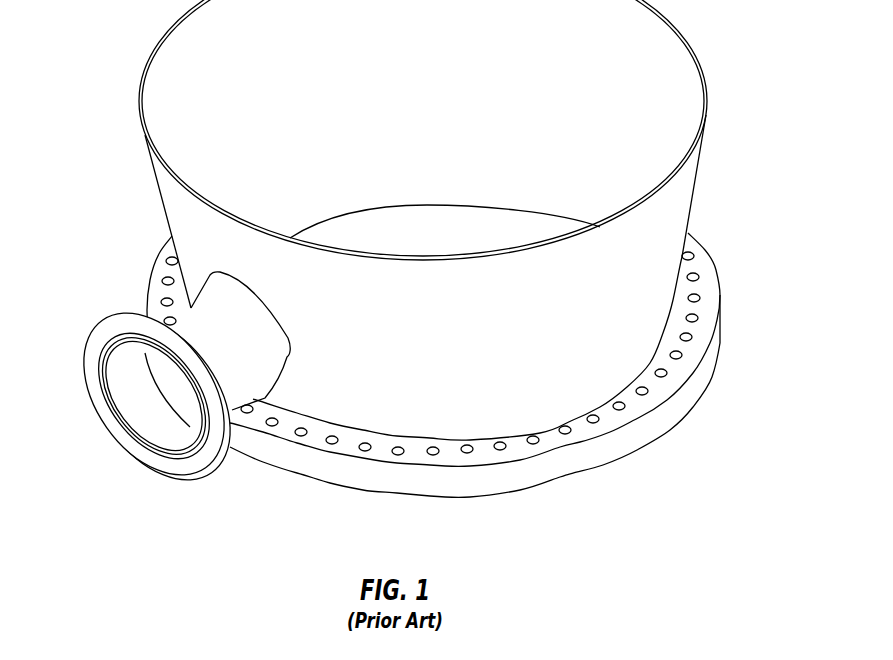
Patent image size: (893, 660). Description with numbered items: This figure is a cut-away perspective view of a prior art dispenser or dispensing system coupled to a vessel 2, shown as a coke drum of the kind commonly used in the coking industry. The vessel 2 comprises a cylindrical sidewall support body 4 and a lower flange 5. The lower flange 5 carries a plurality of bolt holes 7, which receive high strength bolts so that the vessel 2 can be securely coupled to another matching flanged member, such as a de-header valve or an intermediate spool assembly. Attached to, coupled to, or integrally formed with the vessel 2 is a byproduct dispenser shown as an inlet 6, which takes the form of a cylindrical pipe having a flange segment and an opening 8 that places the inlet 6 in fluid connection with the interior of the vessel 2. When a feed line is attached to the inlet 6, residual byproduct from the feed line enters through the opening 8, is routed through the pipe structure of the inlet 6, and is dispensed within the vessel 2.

The vessel 2 is at (116, 186).
The cylindrical sidewall support body 4 is at (675, 211).
The lower flange 5 is at (649, 432).
The inlet 6 is at (125, 296).
The bolt holes 7 is at (694, 298).
The opening 8 is at (153, 420).